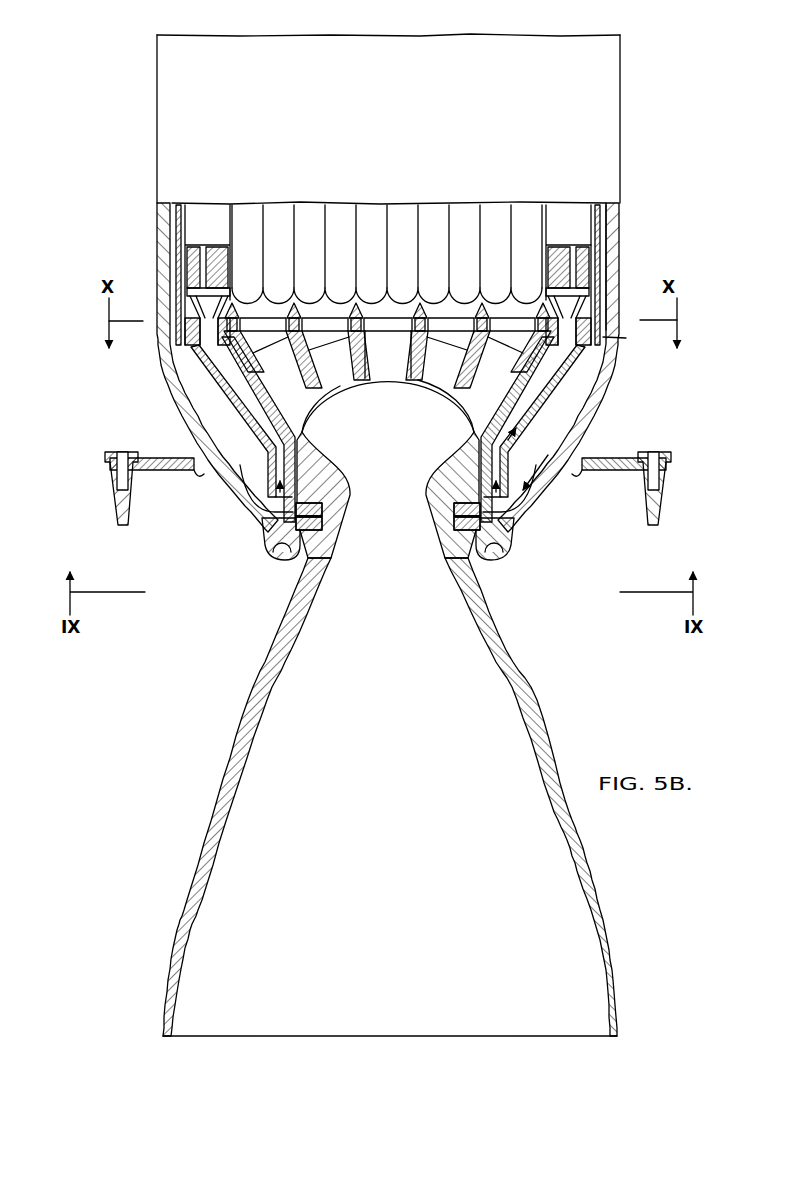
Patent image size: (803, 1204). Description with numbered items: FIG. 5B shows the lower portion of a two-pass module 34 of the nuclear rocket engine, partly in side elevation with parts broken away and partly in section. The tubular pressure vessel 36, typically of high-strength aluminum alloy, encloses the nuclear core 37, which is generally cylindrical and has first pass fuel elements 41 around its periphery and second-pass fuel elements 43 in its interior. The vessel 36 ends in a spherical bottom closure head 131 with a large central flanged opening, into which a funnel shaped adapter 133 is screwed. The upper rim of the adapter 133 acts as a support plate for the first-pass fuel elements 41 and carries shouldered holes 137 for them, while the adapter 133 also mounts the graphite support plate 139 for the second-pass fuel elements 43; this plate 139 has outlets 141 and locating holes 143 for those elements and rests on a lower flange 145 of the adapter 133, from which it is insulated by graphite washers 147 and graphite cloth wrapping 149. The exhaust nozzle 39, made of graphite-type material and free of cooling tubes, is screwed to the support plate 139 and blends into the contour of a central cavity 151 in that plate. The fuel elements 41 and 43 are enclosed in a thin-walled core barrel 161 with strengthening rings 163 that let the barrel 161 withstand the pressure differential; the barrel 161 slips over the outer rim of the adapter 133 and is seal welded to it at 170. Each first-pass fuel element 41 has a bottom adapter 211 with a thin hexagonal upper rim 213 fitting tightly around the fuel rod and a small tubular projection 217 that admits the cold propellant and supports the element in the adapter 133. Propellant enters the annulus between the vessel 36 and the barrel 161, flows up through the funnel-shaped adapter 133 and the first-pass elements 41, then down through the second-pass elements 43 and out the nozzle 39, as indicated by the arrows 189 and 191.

The module 34 is at (659, 107).
The pressure vessel 36 is at (432, 46).
The nuclear core 37 is at (524, 214).
The nozzle 39 is at (214, 755).
The first pass fuel elements 41 is at (560, 259).
The second-pass fuel elements 43 is at (472, 214).
The spherical bottom closure head 131 is at (543, 497).
The funnel shaped adapter 133 is at (283, 446).
The shouldered holes 137 is at (600, 318).
The support plate 139 is at (454, 445).
The outlets 141 is at (340, 380).
The locating holes 143 is at (297, 334).
The lower flange 145 is at (472, 545).
The graphite washers 147 is at (456, 521).
The graphite cloth wrapping 149 is at (458, 513).
The central cavity 151 is at (418, 381).
The core barrel 161 is at (617, 252).
The strengthening rings 163 is at (608, 297).
The seal weld 170 is at (390, 340).
The arrow 189 is at (535, 466).
The arrow 191 is at (512, 446).
The bottom adapter 211 is at (210, 349).
The hexagonal upper rim 213 is at (603, 283).
The tubular projection 217 is at (530, 343).